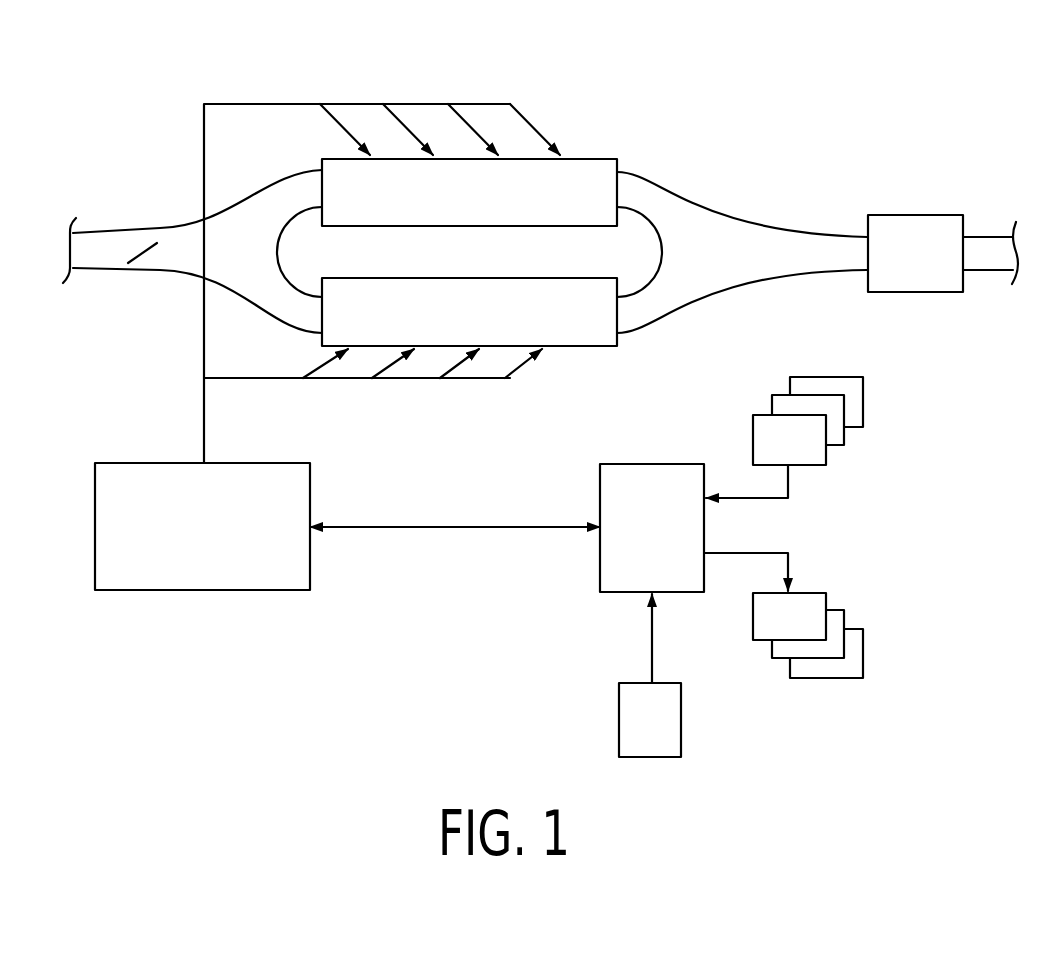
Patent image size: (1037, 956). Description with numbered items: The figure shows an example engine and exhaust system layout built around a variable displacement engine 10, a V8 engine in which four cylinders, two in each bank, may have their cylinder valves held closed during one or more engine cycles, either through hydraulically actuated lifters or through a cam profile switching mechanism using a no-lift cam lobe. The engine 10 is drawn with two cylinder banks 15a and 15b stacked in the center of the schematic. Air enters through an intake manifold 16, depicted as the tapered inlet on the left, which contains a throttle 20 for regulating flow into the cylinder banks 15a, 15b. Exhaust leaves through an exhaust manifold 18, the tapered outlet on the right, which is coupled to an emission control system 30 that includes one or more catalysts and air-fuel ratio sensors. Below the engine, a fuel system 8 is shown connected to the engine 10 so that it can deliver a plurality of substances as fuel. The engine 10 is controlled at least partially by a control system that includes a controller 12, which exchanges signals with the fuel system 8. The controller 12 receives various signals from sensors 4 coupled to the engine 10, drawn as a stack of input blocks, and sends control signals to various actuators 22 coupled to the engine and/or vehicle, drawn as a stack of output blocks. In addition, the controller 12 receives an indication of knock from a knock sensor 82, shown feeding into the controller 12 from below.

The variable displacement engine 10 is at (433, 246).
The intake manifold 16 is at (185, 223).
The exhaust manifold 18 is at (692, 218).
The throttle 20 is at (140, 262).
The emission control system 30 is at (915, 215).
The first cylinder bank 15a is at (490, 213).
The second cylinder bank 15b is at (490, 326).
The fuel system 8 is at (202, 592).
The controller 12 is at (623, 593).
The sensors 4 is at (863, 400).
The actuators 22 is at (863, 652).
The knock sensor 82 is at (683, 722).